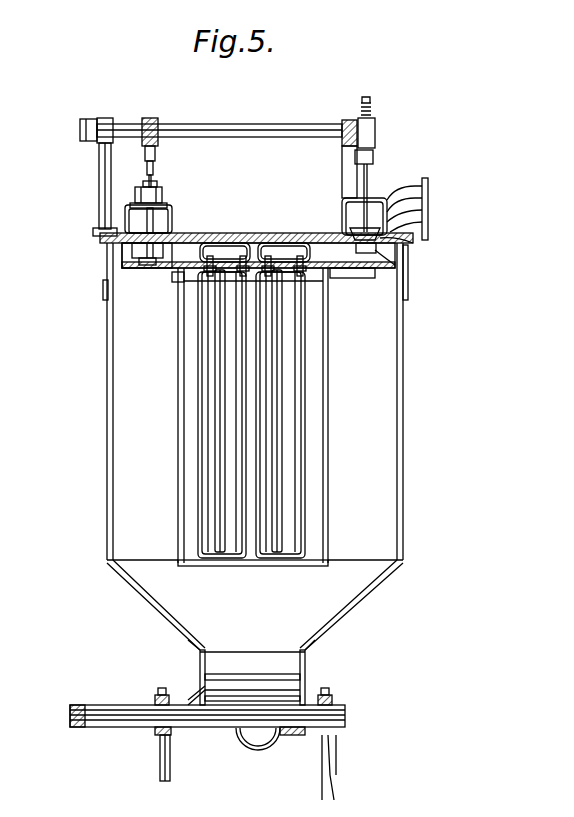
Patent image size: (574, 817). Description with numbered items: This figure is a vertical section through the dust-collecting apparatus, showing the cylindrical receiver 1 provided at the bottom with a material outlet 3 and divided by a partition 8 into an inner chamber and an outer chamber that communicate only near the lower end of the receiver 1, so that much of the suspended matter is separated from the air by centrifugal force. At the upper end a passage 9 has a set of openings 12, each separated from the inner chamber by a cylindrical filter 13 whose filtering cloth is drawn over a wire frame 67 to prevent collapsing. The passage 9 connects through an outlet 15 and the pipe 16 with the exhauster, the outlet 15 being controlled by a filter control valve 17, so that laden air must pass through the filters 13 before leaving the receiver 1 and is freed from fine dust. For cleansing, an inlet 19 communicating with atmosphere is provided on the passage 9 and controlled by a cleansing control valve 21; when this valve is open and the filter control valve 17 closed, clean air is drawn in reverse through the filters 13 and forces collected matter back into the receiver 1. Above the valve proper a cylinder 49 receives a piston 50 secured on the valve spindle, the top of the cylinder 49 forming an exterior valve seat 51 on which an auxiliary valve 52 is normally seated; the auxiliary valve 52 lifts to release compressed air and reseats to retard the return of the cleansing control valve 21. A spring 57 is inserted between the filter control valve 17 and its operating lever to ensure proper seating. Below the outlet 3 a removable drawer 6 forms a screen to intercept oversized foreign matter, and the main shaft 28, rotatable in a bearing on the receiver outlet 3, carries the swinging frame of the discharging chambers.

The cylindrical receiver 1 is at (110, 448).
The material outlet 3 is at (200, 655).
The drawer 6 is at (275, 688).
The partition 8 is at (328, 420).
The passage 9 is at (330, 262).
The openings 12 is at (180, 284).
The filter 13 is at (200, 372).
The outlet 15 is at (398, 238).
The pipe 16 is at (404, 196).
The filter control valve 17 is at (375, 252).
The inlet 19 is at (145, 248).
The cleansing control valve 21 is at (127, 224).
The main shaft 28 is at (126, 705).
The cylinder 49 is at (162, 191).
The piston 50 is at (167, 203).
The exterior valve seat 51 is at (157, 184).
The auxiliary valve 52 is at (148, 181).
The spring 57 is at (362, 101).
The wire frame 67 is at (222, 525).